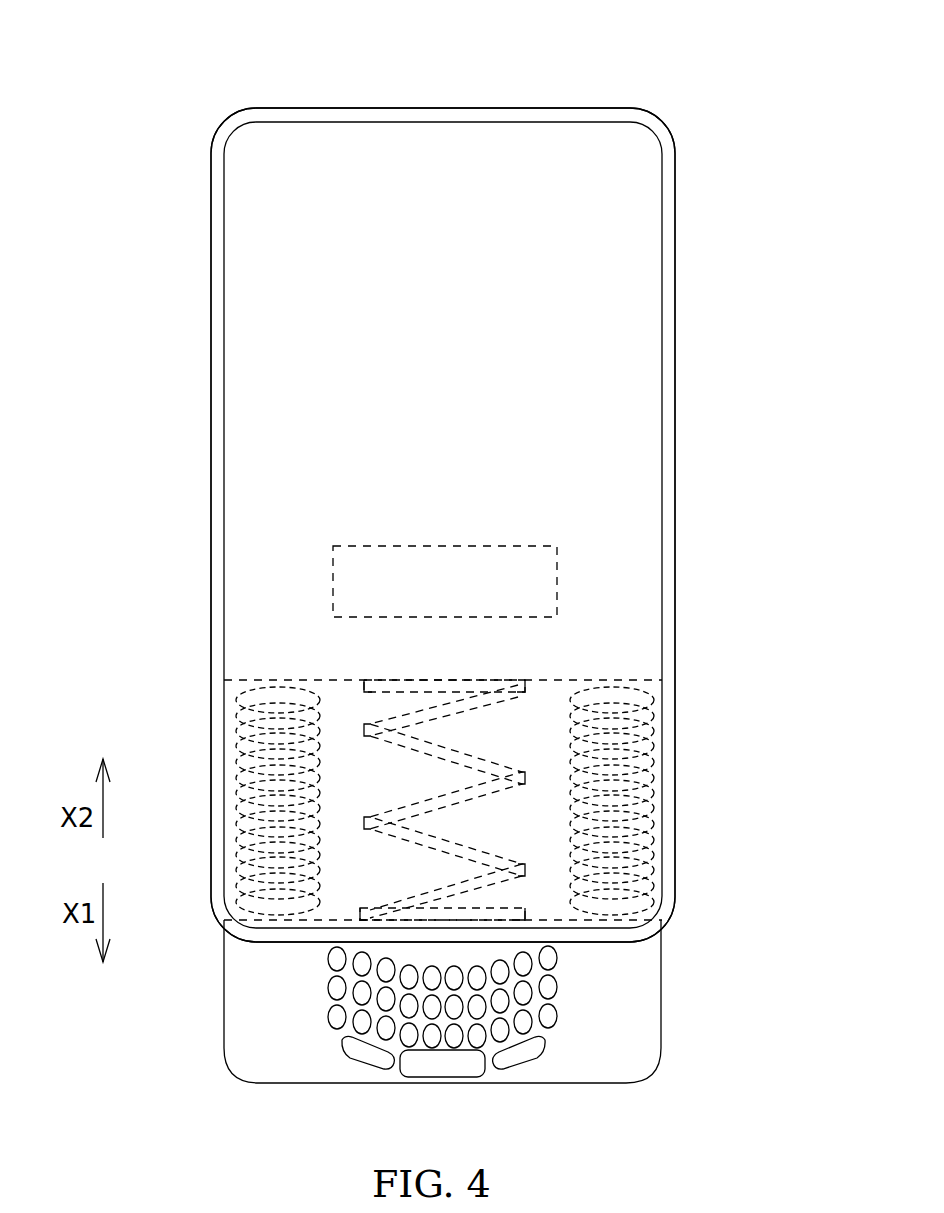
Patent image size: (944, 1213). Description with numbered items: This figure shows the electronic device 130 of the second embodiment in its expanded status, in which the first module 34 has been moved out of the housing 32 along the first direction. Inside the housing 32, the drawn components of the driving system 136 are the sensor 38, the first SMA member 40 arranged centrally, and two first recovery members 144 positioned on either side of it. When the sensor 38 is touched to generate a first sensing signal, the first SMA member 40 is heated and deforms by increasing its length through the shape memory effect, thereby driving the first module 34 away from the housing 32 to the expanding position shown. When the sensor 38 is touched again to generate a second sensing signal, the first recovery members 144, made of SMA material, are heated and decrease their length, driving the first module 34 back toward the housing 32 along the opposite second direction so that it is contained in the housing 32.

The electronic device 130 is at (703, 108).
The housing 32 is at (675, 242).
The first module 34 is at (630, 1008).
The sensor 38 is at (557, 582).
The first SMA member 40 is at (472, 758).
The driving system 136 is at (735, 540).
The first recovery members 144 is at (247, 713).